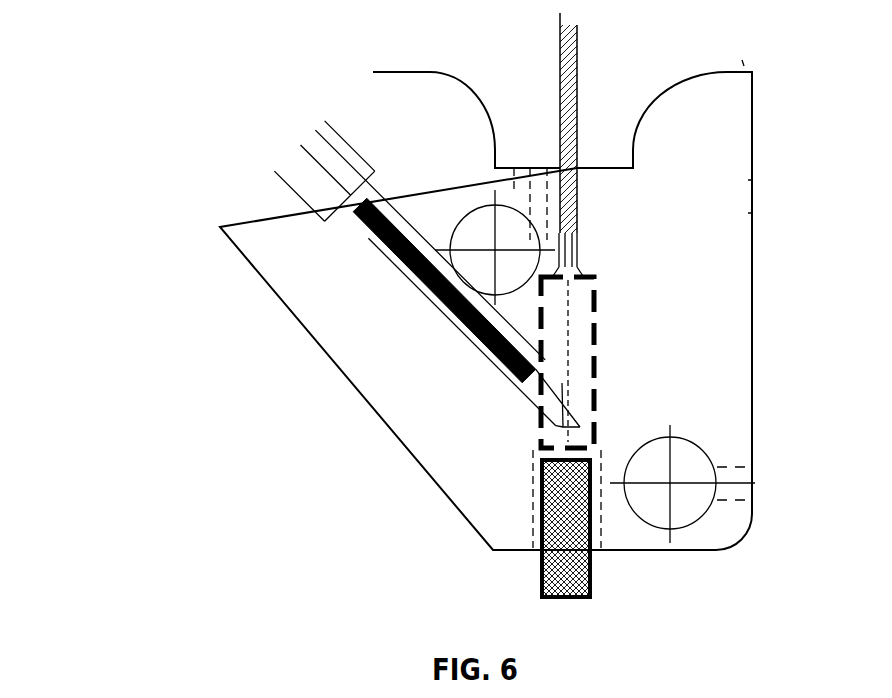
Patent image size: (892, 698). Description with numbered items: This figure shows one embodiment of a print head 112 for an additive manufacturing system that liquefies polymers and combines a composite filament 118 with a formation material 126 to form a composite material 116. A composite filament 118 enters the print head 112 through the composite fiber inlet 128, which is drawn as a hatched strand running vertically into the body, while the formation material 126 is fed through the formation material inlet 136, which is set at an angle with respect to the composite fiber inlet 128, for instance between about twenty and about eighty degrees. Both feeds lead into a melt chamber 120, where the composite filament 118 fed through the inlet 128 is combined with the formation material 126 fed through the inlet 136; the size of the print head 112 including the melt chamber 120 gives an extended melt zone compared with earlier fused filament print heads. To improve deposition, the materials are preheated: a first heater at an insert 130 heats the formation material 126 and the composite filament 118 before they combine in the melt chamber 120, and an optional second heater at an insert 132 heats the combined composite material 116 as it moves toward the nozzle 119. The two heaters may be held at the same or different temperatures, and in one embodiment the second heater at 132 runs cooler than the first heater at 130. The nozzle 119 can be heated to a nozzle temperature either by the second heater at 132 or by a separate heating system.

The print head 112 is at (120, 293).
The composite material 116 is at (543, 553).
The composite filament 118 is at (577, 86).
The nozzle 119 is at (590, 555).
The melt chamber 120 is at (603, 388).
The formation material 126 is at (367, 228).
The composite fiber inlet 128 is at (556, 157).
The insert for first heater 130 is at (417, 290).
The insert for second heater 132 is at (700, 522).
The formation material inlet 136 is at (300, 145).